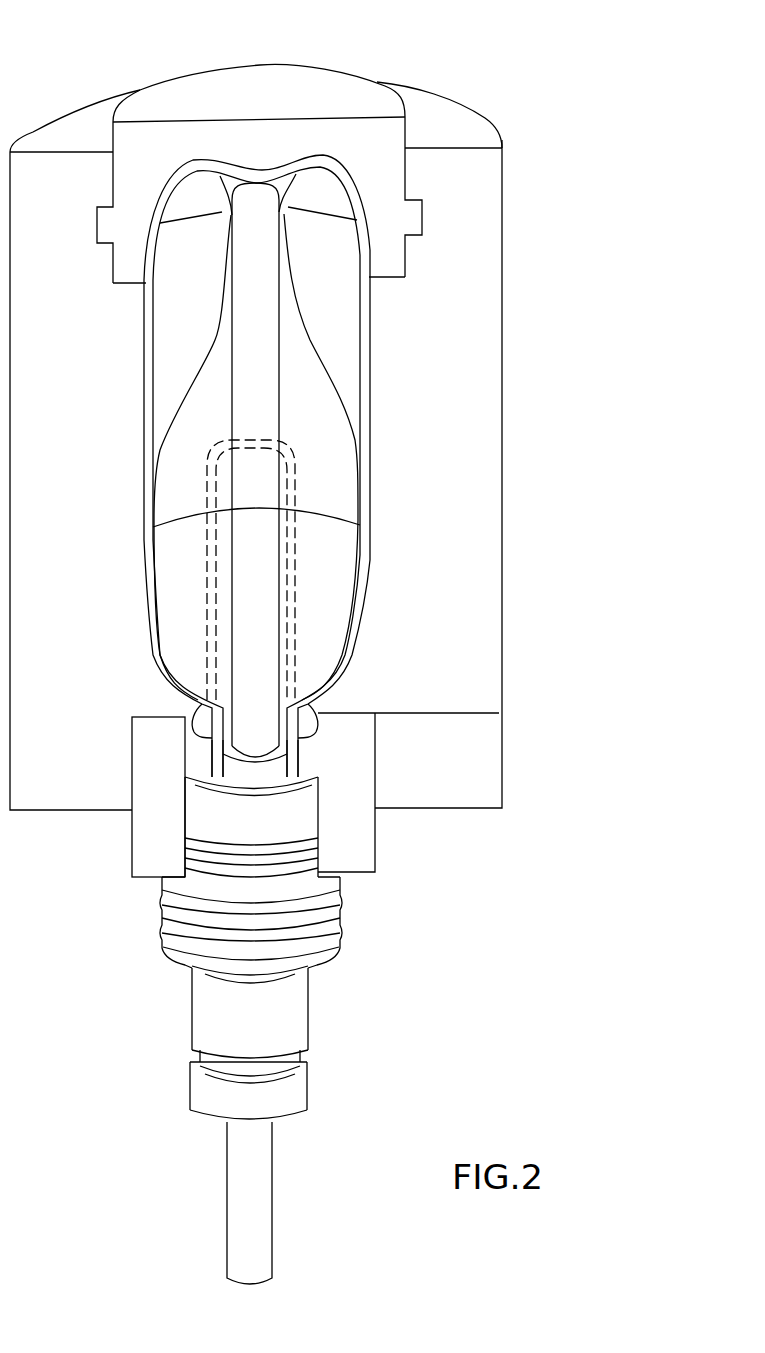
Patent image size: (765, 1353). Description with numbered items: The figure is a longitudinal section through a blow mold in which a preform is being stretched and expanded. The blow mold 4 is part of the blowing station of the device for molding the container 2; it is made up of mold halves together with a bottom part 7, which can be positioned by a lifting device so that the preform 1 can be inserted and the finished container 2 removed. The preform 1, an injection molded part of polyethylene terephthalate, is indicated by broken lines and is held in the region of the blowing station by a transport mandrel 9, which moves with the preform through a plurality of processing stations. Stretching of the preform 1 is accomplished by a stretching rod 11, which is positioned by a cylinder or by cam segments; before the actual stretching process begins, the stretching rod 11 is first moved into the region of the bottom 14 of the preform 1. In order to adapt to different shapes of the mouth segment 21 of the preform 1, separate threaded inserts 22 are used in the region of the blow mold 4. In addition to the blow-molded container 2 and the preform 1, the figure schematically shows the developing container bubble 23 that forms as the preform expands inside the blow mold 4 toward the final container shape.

The preform 1 is at (293, 602).
The container 2 is at (369, 380).
The blow mold 4 is at (458, 447).
The bottom part 7 is at (345, 82).
The transport mandrel 9 is at (328, 940).
The stretching rod 11 is at (227, 1218).
The bottom 14 is at (290, 442).
The mouth segment 21 is at (298, 745).
The threaded inserts 22 is at (357, 833).
The container bubble 23 is at (308, 342).